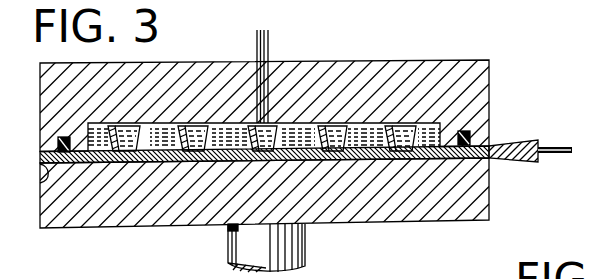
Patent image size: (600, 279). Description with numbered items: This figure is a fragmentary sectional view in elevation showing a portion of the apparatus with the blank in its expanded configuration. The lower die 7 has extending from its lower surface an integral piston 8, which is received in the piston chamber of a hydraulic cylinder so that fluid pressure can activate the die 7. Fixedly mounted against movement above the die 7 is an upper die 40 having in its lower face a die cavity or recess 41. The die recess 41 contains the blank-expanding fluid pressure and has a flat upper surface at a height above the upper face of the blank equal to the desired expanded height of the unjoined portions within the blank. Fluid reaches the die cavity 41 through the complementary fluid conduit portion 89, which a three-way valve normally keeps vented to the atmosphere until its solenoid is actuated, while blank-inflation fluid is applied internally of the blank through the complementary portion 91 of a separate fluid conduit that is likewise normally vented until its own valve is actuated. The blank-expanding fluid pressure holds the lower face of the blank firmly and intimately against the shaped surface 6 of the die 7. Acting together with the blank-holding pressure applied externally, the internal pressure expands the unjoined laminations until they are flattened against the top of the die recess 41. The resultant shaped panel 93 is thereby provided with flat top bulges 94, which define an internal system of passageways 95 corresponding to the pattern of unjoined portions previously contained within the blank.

The upper die 40 is at (489, 80).
The die 7 is at (77, 228).
The shaped surface 6 is at (42, 187).
The shaped panel 93 is at (40, 160).
The complementary portion of fluid conduit 91 is at (552, 145).
The complementary fluid conduit portion 89 is at (281, 76).
The die cavity 41 is at (366, 122).
The flat top bulges 94 is at (200, 126).
The internal passageways 95 is at (192, 150).
The piston 8 is at (230, 264).